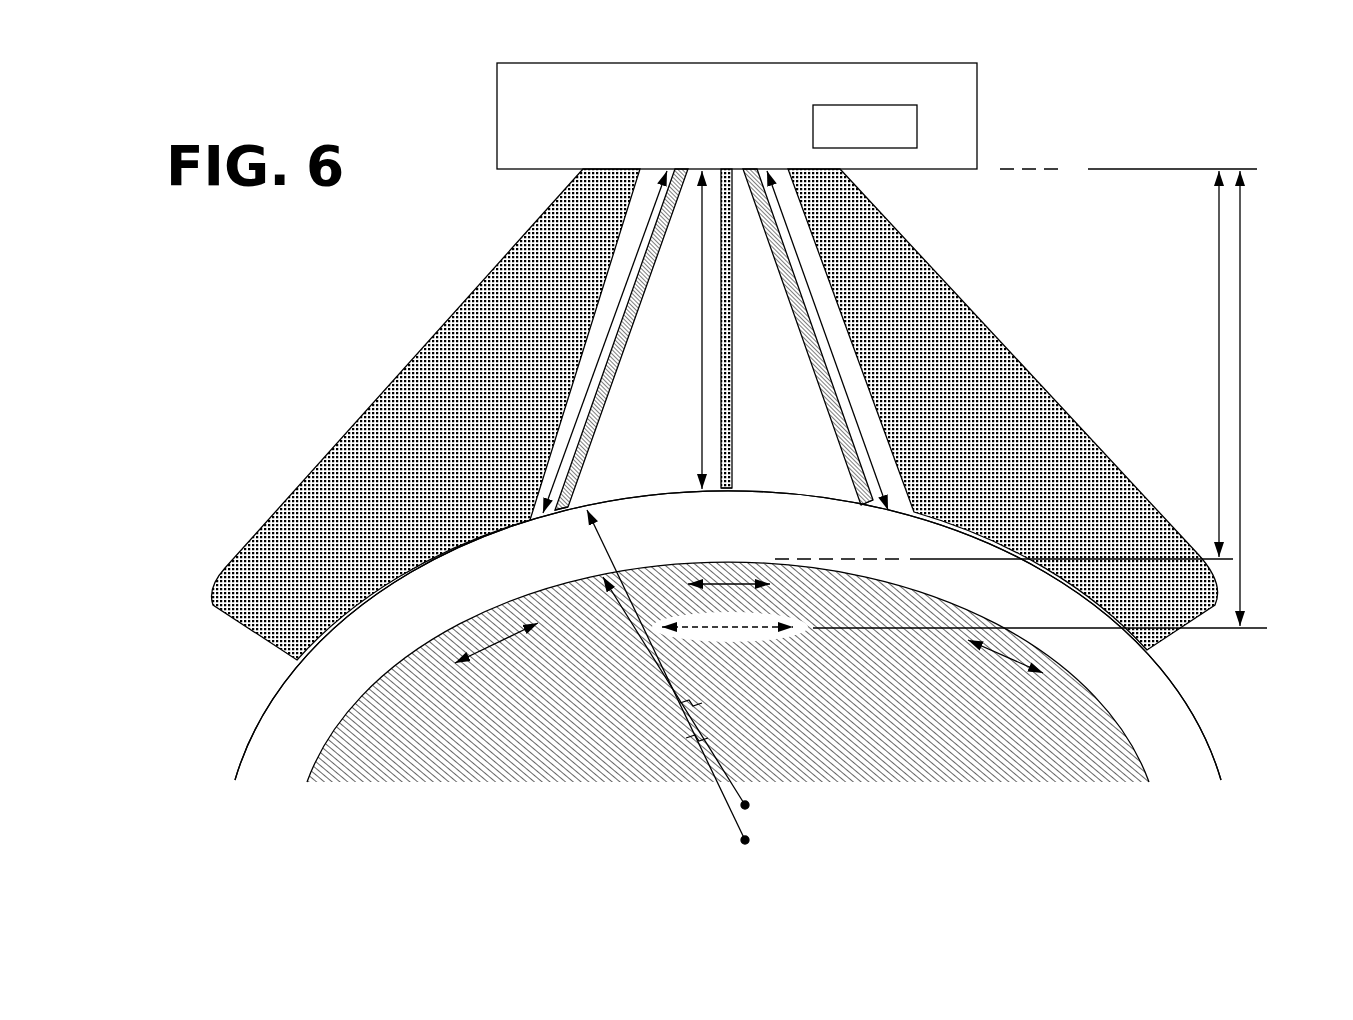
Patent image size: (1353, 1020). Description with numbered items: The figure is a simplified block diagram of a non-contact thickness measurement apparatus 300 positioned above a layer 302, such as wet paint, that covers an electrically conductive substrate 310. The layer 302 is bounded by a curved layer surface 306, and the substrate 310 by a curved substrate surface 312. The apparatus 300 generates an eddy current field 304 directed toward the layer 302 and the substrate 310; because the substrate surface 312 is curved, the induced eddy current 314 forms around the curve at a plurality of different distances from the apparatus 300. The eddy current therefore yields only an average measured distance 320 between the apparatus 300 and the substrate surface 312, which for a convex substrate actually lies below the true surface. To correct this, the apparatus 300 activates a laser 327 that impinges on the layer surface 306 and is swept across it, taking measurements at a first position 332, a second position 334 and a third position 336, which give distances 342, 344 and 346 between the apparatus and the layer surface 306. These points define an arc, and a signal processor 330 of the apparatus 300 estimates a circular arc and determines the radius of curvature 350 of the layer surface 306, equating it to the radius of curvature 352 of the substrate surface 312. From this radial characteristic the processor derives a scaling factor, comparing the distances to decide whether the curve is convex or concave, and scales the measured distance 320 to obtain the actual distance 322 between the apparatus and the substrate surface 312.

The non-contact thickness measurement apparatus 300 is at (497, 98).
The signal processor 330 is at (813, 137).
The eddy current field 304 is at (715, 414).
The distance 344 is at (637, 252).
The distance 346 is at (793, 245).
The laser 327 is at (733, 292).
The distance 342 is at (702, 314).
The first position 332 is at (751, 433).
The second position 334 is at (604, 460).
The third position 336 is at (829, 467).
The measured distance 320 is at (1241, 256).
The actual distance 322 is at (1218, 272).
The layer 302 is at (671, 635).
The layer surface 306 is at (263, 712).
The electrically conductive substrate 310 is at (797, 672).
The substrate surface 312 is at (1113, 717).
The induced eddy current 314 is at (500, 643).
The radius of curvature 350 is at (740, 767).
The radius of curvature 352 is at (717, 793).